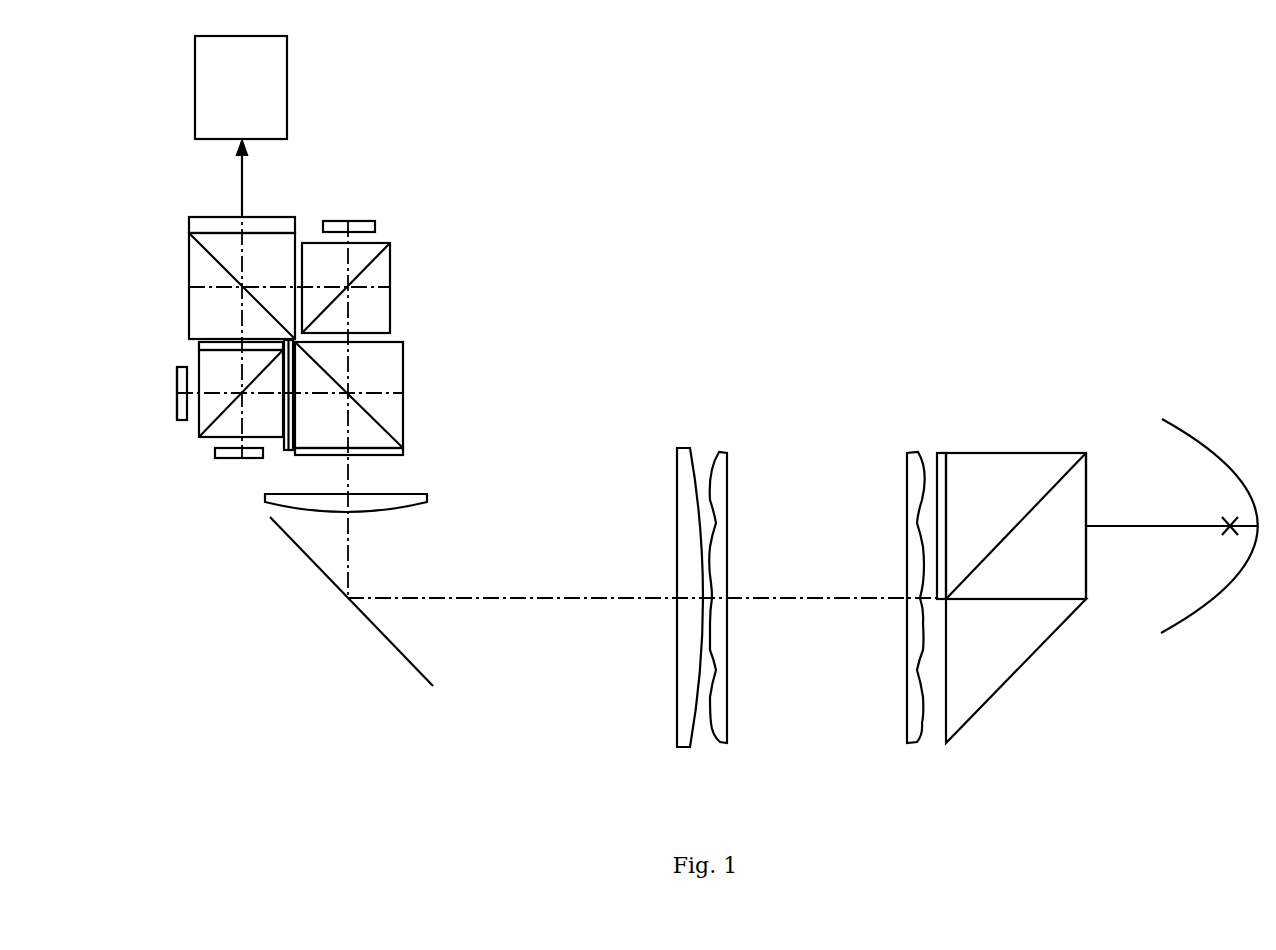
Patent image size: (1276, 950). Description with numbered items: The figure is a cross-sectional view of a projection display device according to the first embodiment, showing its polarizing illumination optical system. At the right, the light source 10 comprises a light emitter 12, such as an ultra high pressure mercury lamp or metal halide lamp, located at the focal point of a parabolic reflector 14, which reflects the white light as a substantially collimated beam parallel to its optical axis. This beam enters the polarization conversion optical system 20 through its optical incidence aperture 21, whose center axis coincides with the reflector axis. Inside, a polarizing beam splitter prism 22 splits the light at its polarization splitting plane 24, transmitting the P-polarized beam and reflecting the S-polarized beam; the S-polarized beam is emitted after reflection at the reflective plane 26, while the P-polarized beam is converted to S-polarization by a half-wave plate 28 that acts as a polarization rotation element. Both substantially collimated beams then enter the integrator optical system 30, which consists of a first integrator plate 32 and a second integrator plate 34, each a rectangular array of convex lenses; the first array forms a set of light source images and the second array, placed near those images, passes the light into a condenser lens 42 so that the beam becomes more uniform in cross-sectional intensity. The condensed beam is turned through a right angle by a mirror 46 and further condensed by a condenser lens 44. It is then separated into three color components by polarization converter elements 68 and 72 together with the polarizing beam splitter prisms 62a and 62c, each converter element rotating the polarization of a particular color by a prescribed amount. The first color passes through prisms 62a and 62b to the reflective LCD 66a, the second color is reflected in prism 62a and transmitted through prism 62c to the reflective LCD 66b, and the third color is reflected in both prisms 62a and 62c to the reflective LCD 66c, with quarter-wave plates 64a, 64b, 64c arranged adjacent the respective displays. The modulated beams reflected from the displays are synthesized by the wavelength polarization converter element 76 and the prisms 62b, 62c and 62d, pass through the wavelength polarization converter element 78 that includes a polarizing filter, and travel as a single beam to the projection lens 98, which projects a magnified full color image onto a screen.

The light source 10 is at (1173, 496).
The light emitter 12 is at (1227, 532).
The parabolic reflector 14 is at (1200, 610).
The polarization conversion optical system 20 is at (1010, 536).
The optical incidence aperture 21 is at (1090, 478).
The polarizing beam splitter prism 22 is at (1078, 571).
The polarization splitting plane 24 is at (1067, 465).
The reflective plane 26 is at (1005, 680).
The half-wave plate 28 is at (940, 452).
The integrator optical system 30 is at (746, 549).
The first integrator plate 32 is at (913, 452).
The second integrator plate 34 is at (724, 452).
The condenser lens 42 is at (685, 447).
The condenser lens 44 is at (428, 497).
The mirror 46 is at (380, 633).
The polarizing beam splitter prism 62a is at (398, 380).
The polarizing beam splitter prism 62b is at (386, 291).
The polarizing beam splitter prism 62c is at (199, 424).
The polarizing beam splitter prism 62d is at (198, 292).
The quarter-wave plate 64a is at (376, 228).
The quarter-wave plate 64b is at (178, 368).
The quarter-wave plate 64c is at (215, 452).
The reflective LCD 66a is at (356, 221).
The reflective LCD 66b is at (177, 406).
The reflective LCD 66c is at (238, 462).
The polarization converter element 68 is at (404, 455).
The polarization converter element 72 is at (290, 452).
The wavelength polarization converter element 76 is at (193, 344).
The wavelength polarization converter element 78 is at (190, 228).
The projection lens 98 is at (289, 85).